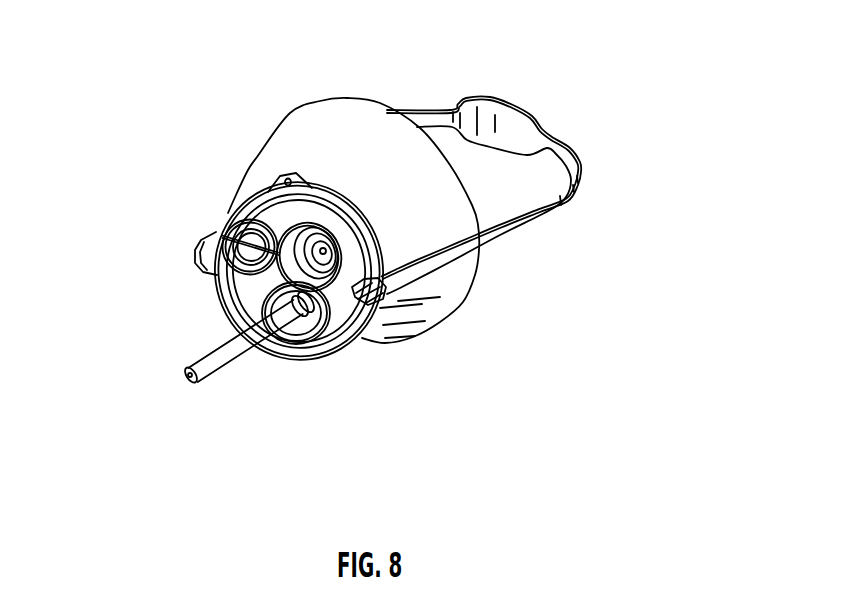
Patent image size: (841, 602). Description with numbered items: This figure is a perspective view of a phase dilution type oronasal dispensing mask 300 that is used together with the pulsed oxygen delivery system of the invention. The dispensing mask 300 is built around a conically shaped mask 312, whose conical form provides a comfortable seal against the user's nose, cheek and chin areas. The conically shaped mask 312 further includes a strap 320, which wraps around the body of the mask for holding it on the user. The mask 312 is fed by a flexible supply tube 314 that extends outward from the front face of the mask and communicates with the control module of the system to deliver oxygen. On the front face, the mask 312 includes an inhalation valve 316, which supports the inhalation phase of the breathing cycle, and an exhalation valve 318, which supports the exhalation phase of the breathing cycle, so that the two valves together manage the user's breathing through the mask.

The phase dilution type oronasal dispensing mask 300 is at (223, 85).
The conically shaped mask 312 is at (262, 158).
The flexible supply tube 314 is at (221, 354).
The inhalation valve 316 is at (216, 219).
The exhalation valve 318 is at (382, 288).
The strap 320 is at (580, 187).